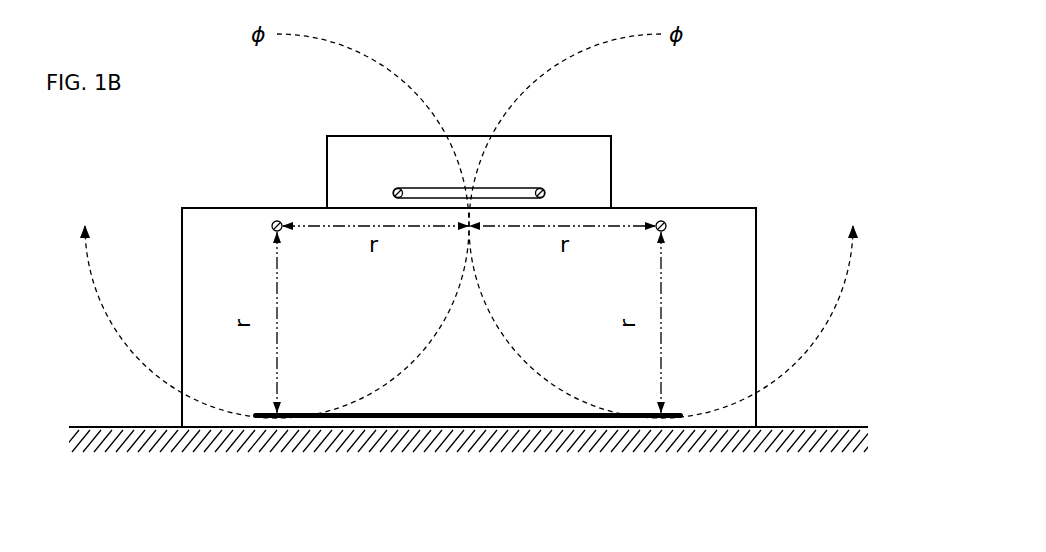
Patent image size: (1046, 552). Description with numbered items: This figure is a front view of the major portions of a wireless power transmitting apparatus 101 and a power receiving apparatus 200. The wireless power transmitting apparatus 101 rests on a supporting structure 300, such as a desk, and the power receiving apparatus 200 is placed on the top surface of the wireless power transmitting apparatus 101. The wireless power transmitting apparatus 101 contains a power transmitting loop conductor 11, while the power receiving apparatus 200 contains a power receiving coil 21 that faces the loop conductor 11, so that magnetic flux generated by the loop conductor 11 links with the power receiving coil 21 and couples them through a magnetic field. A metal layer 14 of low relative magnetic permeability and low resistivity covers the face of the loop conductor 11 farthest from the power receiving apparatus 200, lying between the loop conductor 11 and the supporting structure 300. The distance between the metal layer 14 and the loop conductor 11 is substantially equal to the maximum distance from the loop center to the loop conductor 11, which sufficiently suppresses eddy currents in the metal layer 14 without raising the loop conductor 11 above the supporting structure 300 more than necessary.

The power transmitting loop conductor 11 is at (664, 222).
The metal layer 14 is at (472, 418).
The power receiving coil 21 is at (546, 192).
The wireless power transmitting apparatus 101 is at (757, 208).
The power receiving apparatus 200 is at (612, 136).
The supporting structure 300 is at (832, 427).